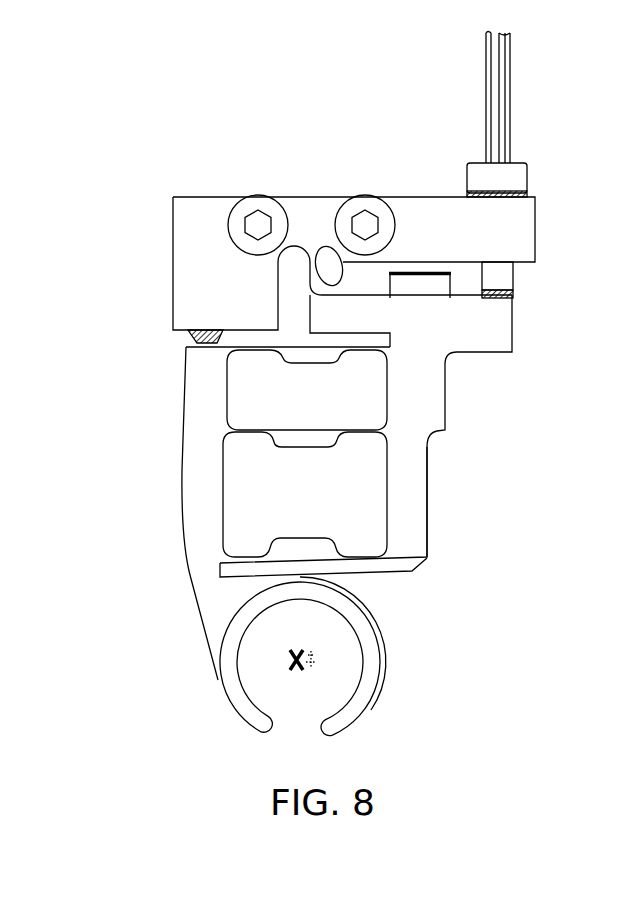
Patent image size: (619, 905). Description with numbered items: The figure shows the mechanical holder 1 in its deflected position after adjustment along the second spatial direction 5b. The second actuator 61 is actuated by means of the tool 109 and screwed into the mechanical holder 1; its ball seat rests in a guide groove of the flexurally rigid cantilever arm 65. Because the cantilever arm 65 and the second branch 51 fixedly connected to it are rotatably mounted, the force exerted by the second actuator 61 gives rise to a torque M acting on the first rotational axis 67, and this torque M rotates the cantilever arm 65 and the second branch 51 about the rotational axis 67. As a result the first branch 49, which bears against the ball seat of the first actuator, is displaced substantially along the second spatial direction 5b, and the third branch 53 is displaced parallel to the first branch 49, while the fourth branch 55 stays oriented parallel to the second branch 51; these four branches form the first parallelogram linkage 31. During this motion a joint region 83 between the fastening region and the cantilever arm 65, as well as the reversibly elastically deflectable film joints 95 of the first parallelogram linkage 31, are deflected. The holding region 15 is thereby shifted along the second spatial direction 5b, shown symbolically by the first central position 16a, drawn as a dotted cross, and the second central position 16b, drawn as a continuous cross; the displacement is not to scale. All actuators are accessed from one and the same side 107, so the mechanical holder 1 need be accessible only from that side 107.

The mechanical holder 1 is at (402, 84).
The side 107 is at (166, 152).
The first rotational axis 67 is at (315, 253).
The joint region 83 is at (307, 294).
The torque M is at (342, 272).
The tool 109 is at (511, 100).
The second actuator 61 is at (518, 180).
The first branch 49 is at (304, 357).
The flexurally rigid cantilever arm 65 is at (513, 340).
The second branch 51 is at (441, 396).
The first parallelogram linkage 31 is at (462, 478).
The film joints 95 is at (363, 365).
The third branch 53 is at (307, 546).
The fourth branch 55 is at (195, 455).
The holding region 15 is at (423, 680).
The first central position 16a is at (333, 683).
The second central position 16b is at (277, 684).
The second spatial direction 5b is at (527, 602).